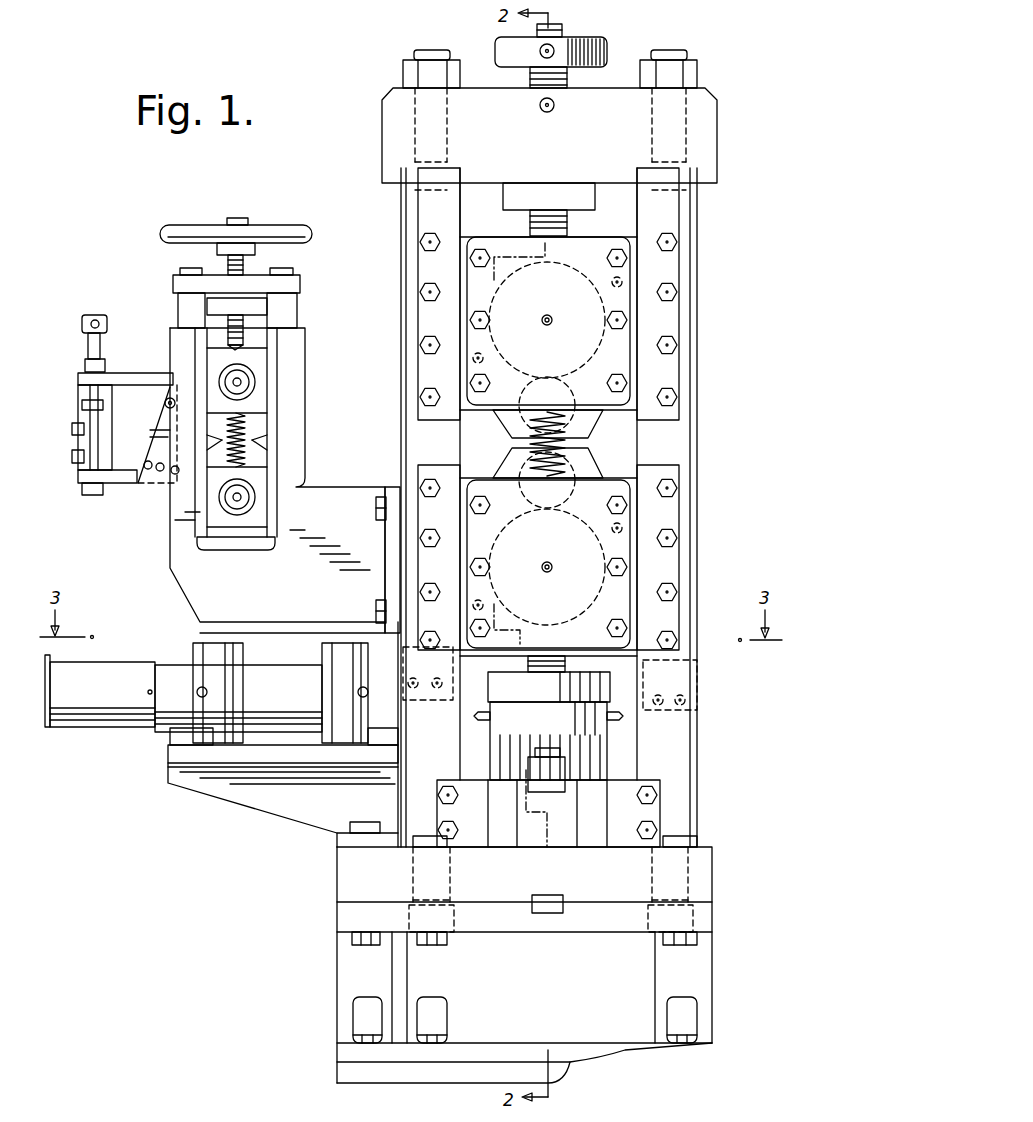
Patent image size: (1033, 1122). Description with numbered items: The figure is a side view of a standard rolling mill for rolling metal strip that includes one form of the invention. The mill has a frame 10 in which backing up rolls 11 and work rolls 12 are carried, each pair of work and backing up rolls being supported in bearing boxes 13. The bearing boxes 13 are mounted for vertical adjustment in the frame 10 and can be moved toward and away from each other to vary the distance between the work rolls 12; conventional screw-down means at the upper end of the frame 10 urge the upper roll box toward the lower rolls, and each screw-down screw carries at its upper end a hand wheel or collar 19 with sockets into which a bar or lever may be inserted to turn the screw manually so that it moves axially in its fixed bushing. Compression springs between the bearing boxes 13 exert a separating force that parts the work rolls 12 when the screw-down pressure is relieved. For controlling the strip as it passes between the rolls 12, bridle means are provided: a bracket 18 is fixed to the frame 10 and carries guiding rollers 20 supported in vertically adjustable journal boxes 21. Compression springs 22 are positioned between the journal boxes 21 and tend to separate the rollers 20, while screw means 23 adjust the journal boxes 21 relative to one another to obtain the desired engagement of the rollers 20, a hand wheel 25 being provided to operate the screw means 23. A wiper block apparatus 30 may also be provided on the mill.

The frame 10 is at (714, 134).
The backing up rolls 11 is at (556, 355).
The work rolls 12 is at (556, 403).
The bearing boxes 13 is at (620, 353).
The bracket 18 is at (330, 498).
The hand wheel or collar 19 is at (496, 46).
The guiding rollers 20 is at (258, 452).
The journal boxes 21 is at (262, 357).
The compression springs 22 is at (186, 474).
The screw means 23 is at (243, 268).
The hand wheel 25 is at (262, 232).
The wiper block apparatus 30 is at (72, 428).